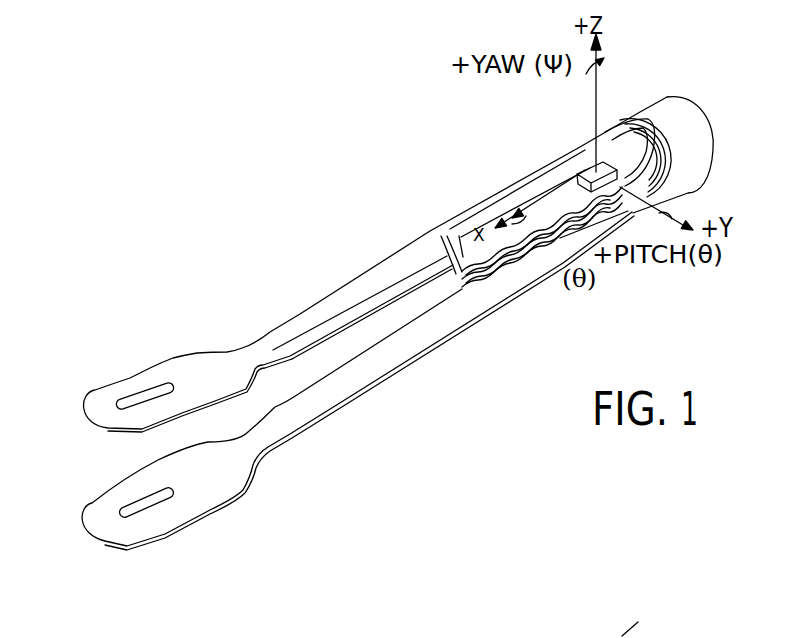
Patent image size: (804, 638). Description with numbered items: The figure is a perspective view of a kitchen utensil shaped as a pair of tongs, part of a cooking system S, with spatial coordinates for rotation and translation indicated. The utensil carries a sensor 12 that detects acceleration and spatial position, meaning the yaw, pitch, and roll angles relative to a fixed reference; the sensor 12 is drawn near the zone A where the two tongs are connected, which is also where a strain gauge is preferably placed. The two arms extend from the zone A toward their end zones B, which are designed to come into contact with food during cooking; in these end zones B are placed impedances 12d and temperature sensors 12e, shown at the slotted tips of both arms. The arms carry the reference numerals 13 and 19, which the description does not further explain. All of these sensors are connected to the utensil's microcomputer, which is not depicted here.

The sensor 12 is at (600, 158).
The impedances 12d is at (162, 386).
The temperature sensors 12e is at (139, 512).
The lower arm (tong) 13 is at (198, 531).
The upper arm (tong) 19 is at (481, 378).
The zone A is at (698, 152).
The end zones B is at (150, 378).
The cooking system S is at (640, 616).